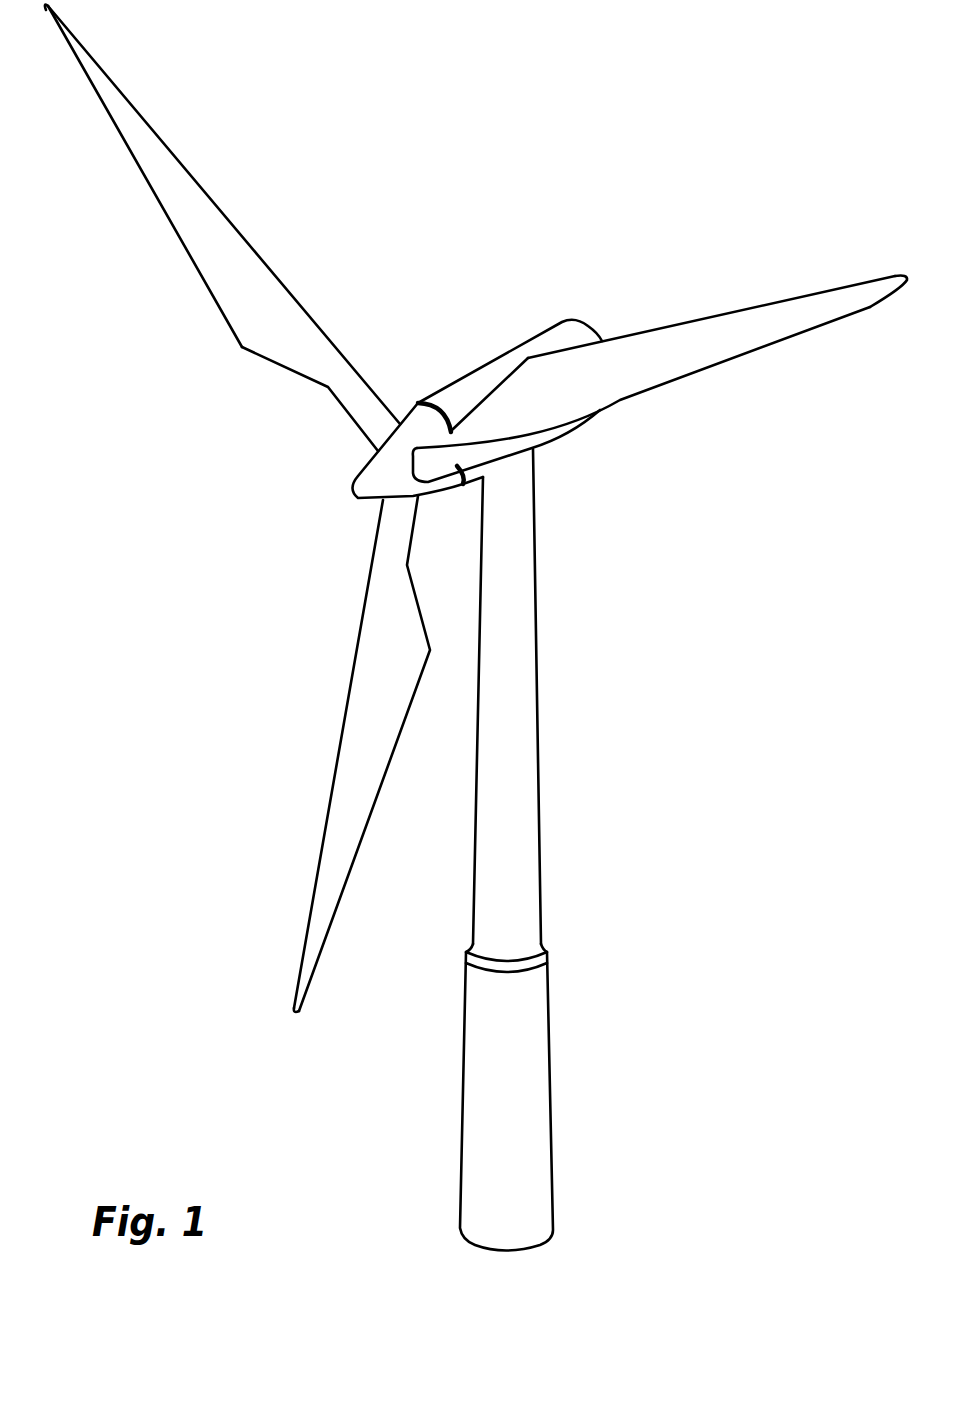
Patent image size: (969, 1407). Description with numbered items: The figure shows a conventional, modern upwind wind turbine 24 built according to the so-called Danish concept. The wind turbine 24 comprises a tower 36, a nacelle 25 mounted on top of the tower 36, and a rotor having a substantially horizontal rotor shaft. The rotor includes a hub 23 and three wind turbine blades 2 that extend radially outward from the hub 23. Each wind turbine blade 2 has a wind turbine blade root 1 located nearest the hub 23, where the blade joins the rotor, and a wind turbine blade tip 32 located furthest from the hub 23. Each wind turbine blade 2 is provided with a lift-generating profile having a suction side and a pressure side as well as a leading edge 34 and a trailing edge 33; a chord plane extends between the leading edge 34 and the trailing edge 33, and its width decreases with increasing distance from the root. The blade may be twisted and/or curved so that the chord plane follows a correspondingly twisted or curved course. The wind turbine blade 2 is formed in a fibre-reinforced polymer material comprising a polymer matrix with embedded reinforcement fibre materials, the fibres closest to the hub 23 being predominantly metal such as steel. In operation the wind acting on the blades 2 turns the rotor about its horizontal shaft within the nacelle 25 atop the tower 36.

The wind turbine blade root 1 is at (380, 427).
The wind turbine blade 2 is at (253, 315).
The hub 23 is at (372, 489).
The wind turbine 24 is at (637, 780).
The nacelle 25 is at (473, 385).
The wind turbine blade tip 32 is at (90, 63).
The trailing edge 33 is at (143, 182).
The leading edge 34 is at (190, 167).
The tower 36 is at (527, 699).